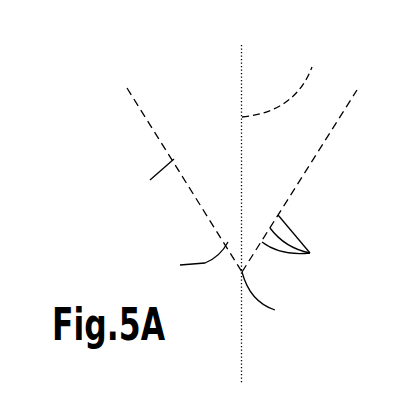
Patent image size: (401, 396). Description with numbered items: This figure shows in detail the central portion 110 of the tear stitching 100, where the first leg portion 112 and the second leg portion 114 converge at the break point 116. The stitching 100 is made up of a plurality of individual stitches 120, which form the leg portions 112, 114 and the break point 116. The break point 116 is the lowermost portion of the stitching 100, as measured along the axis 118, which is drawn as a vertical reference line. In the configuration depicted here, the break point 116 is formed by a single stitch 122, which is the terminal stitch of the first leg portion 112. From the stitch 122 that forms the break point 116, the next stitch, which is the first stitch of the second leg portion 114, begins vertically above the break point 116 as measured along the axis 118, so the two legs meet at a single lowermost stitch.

The stitching 100 is at (105, 158).
The central portion 110 is at (161, 150).
The first leg portion 112 is at (142, 183).
The second leg portion 114 is at (306, 173).
The break point 116 is at (282, 299).
The axis 118 is at (289, 78).
The individual stitches 120 is at (307, 240).
The single stitch 122 is at (182, 259).